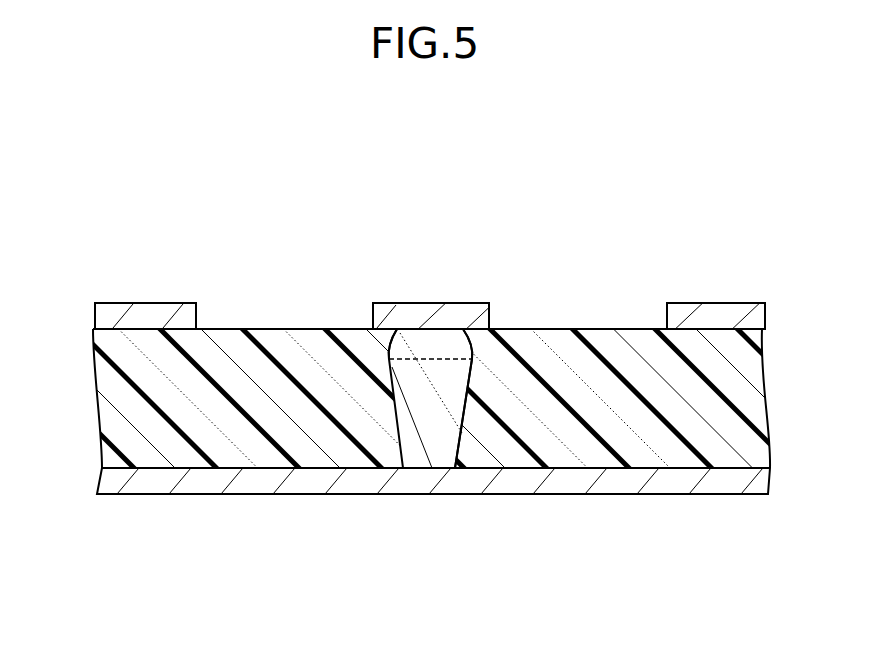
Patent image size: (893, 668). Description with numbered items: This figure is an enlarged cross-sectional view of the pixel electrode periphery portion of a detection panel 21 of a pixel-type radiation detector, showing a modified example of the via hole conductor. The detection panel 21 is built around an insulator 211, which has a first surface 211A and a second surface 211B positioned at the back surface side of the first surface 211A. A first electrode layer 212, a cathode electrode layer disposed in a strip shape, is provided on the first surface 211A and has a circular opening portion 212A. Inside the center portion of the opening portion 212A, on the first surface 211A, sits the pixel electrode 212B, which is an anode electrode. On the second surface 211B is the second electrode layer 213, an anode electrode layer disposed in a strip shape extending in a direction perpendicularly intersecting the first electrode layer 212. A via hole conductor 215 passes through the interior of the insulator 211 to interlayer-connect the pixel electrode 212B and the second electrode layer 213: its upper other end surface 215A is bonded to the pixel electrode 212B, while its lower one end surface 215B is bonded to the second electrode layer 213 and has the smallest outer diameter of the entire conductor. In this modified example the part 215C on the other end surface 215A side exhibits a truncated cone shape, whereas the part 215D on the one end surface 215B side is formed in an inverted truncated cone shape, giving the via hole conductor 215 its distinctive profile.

The detection panel 21 is at (168, 184).
The insulator 211 is at (117, 425).
The first surface 211A is at (715, 328).
The second surface 211B is at (722, 469).
The first electrode layer 212 is at (142, 303).
The opening portion 212A is at (589, 321).
The pixel electrode 212B is at (402, 302).
The second electrode layer 213 is at (150, 490).
The via hole conductor 215 is at (410, 425).
The other end surface 215A is at (447, 328).
The one end surface 215B is at (423, 469).
The part of the other end surface side 215C is at (382, 325).
The part of the one end surface side 215D is at (462, 432).